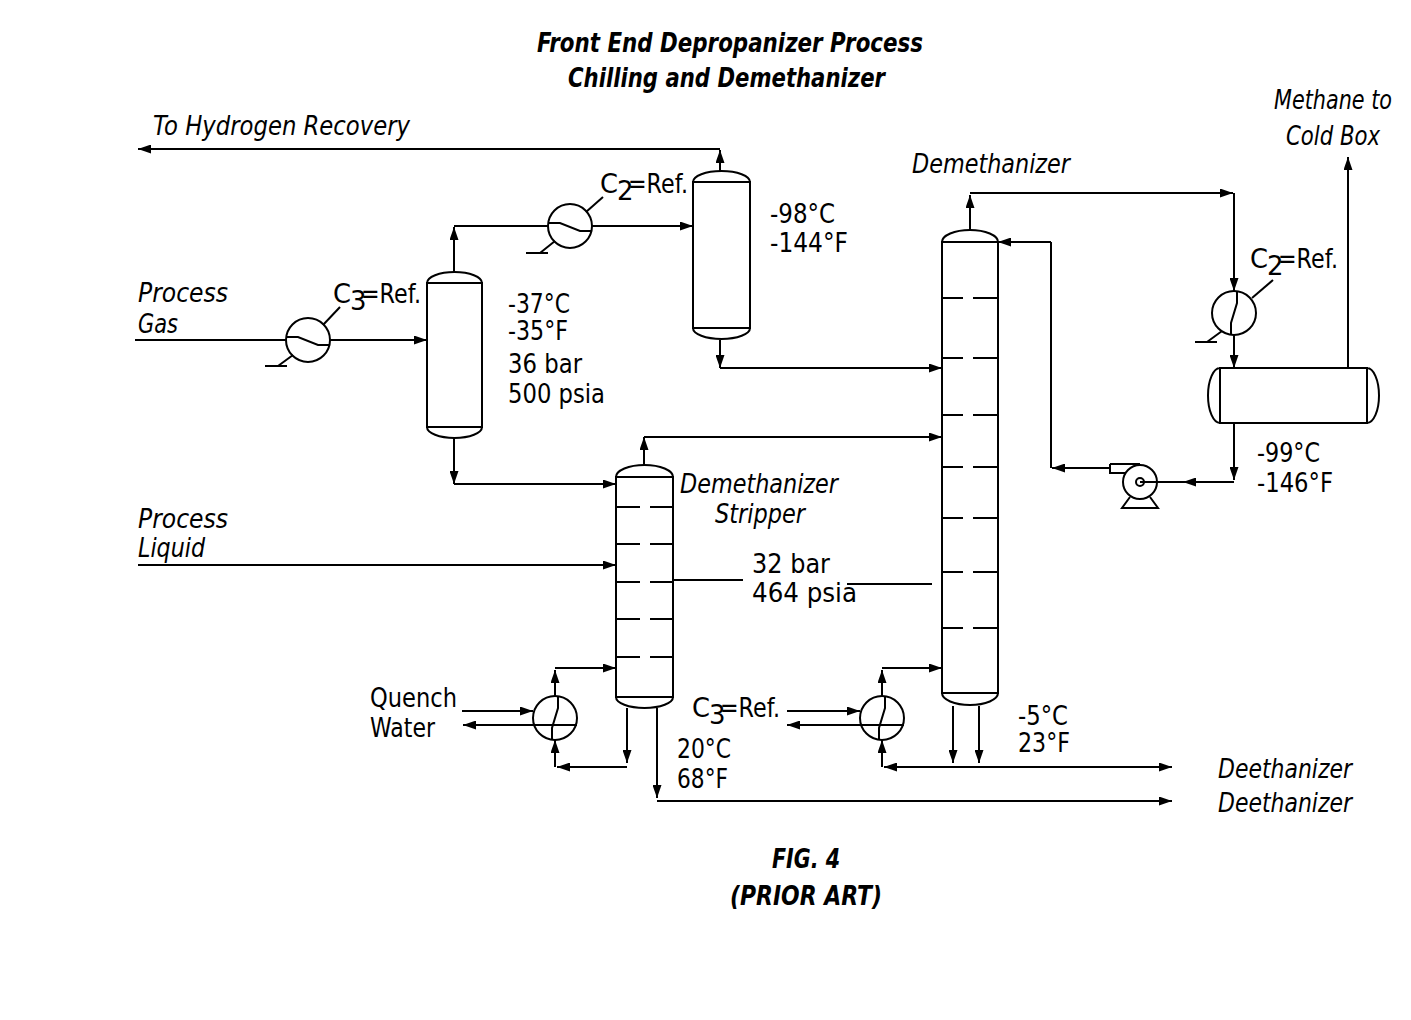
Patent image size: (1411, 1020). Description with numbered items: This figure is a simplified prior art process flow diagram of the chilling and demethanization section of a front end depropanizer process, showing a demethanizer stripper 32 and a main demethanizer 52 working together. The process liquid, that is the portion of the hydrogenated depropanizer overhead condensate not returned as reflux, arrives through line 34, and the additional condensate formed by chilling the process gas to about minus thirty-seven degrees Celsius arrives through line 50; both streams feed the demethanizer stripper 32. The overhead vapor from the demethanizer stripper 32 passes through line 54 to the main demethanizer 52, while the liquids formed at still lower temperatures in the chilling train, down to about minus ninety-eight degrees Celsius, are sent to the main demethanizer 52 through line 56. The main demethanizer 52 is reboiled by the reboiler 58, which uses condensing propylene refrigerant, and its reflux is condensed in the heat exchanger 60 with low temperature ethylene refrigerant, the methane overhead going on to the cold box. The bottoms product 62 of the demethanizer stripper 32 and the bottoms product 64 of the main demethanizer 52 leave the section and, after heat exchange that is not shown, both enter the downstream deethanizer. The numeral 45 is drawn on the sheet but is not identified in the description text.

The demethanizer stripper 32 is at (613, 621).
The line 34 is at (228, 565).
The prior art front end depropanizer chilling and demethanizer system 45 is at (282, 742).
The line 50 is at (508, 484).
The main demethanizer 52 is at (998, 617).
The line 54 is at (753, 437).
The line 56 is at (783, 368).
The reboiler 58 is at (872, 697).
The heat exchanger 60 is at (1215, 308).
The bottoms product 62 is at (855, 801).
The bottoms product 64 is at (1102, 767).